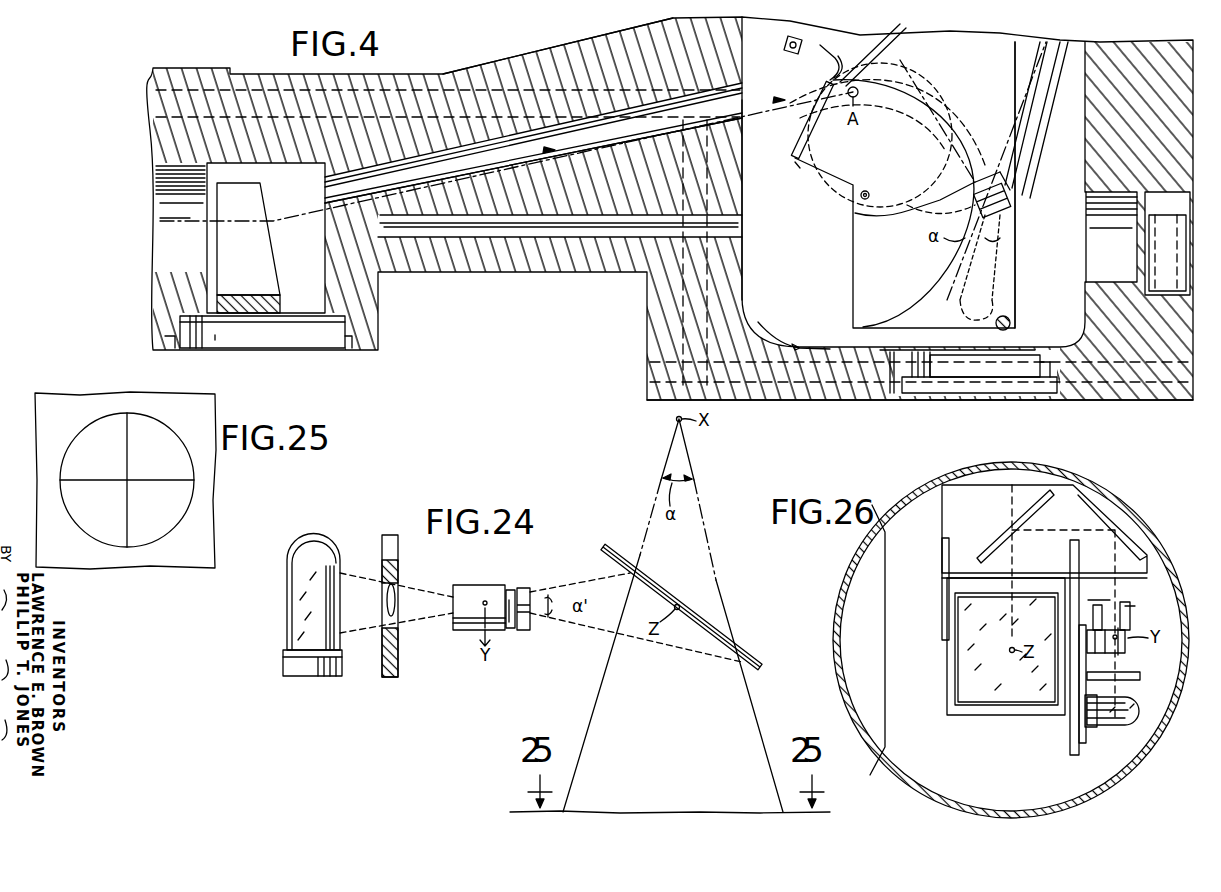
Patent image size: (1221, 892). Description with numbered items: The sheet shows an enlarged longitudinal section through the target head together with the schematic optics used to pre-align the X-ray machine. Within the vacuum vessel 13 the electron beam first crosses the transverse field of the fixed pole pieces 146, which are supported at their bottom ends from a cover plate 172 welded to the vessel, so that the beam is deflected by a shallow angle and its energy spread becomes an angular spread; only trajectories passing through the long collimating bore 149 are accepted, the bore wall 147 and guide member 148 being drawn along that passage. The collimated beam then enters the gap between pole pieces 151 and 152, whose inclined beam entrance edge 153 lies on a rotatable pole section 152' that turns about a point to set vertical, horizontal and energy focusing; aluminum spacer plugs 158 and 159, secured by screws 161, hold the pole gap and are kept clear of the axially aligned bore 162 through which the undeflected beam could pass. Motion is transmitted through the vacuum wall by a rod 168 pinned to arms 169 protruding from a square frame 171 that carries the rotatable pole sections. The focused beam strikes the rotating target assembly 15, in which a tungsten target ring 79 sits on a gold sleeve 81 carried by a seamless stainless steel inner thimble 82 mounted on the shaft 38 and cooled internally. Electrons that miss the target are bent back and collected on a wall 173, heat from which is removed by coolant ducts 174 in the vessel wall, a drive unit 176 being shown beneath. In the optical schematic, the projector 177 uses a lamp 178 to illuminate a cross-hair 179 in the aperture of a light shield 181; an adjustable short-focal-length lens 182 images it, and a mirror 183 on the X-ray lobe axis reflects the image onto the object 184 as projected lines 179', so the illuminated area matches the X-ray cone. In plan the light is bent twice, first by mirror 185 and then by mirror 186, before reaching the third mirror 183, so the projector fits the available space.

In FIG. 4, the vacuum vessel 13 is at (553, 44).
In FIG. 4, the rotating target assembly 15 is at (1020, 224).
In FIG. 4, the shaft 38 is at (1044, 118).
In FIG. 4, the target ring 79 is at (1010, 210).
In FIG. 4, the metal sleeve 81 is at (1012, 190).
In FIG. 4, the inner thimble 82 is at (1030, 150).
In FIG. 4, the pole pieces 146 is at (278, 262).
In FIG. 4, the tube wall 147 is at (346, 196).
In FIG. 4, the reflector bar 148 is at (378, 212).
In FIG. 4, the collimating bore 149 is at (758, 98).
In FIG. 4, the pole piece 151 is at (855, 243).
In FIG. 4, the pole piece 152 is at (903, 197).
In FIG. 4, the rotatable pole section 152' is at (930, 202).
In FIG. 4, the beam entrance edge 153 is at (795, 162).
In FIG. 4, the spacer plug 158 is at (890, 180).
In FIG. 4, the spacer plug 159 is at (1010, 316).
In FIG. 4, the screws 161 is at (860, 195).
In FIG. 4, the axially aligned bore 162 is at (761, 200).
In FIG. 4, the rod 168 is at (776, 41).
In FIG. 4, the arms 169 is at (830, 58).
In FIG. 4, the square frame 171 is at (803, 137).
In FIG. 4, the cover plate 172 is at (258, 332).
In FIG. 4, the wall 173 is at (775, 320).
In FIG. 4, the ducts 174 is at (750, 398).
In FIG. 4, the drive unit 176 is at (1000, 347).
In FIG. 26, the projector 177 is at (1032, 752).
In FIG. 24, the lamp 178 is at (325, 545).
In FIG. 26, the lamp 178 is at (1116, 726).
In FIG. 24, the cross-hair 179 is at (411, 587).
In FIG. 25, the projected cross-hair lines 179' is at (127, 480).
In FIG. 24, the light shield 181 is at (390, 540).
In FIG. 26, the light shield 181 is at (1140, 677).
In FIG. 24, the optical lens 182 is at (480, 590).
In FIG. 26, the optical lens 182 is at (1122, 630).
In FIG. 24, the mirror 183 is at (712, 628).
In FIG. 26, the mirror 183 is at (1008, 705).
In FIG. 24, the object 184 is at (527, 811).
In FIG. 25, the object 184 is at (212, 506).
In FIG. 26, the mirror 185 is at (1103, 520).
In FIG. 26, the mirror 186 is at (1018, 528).